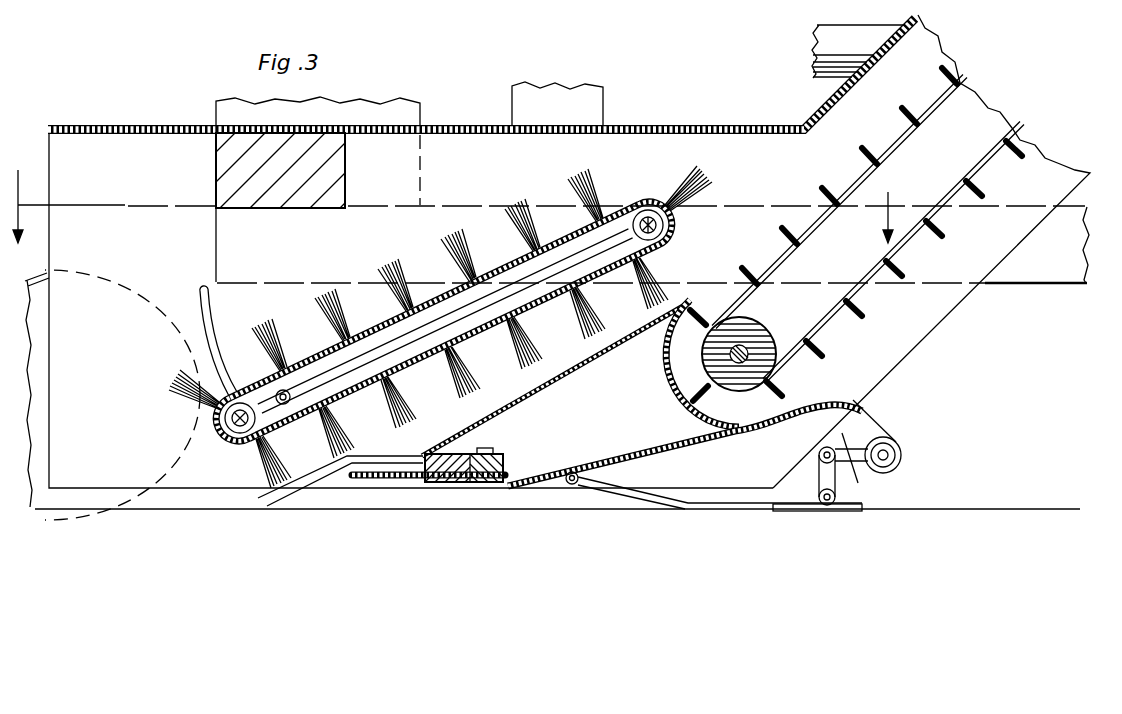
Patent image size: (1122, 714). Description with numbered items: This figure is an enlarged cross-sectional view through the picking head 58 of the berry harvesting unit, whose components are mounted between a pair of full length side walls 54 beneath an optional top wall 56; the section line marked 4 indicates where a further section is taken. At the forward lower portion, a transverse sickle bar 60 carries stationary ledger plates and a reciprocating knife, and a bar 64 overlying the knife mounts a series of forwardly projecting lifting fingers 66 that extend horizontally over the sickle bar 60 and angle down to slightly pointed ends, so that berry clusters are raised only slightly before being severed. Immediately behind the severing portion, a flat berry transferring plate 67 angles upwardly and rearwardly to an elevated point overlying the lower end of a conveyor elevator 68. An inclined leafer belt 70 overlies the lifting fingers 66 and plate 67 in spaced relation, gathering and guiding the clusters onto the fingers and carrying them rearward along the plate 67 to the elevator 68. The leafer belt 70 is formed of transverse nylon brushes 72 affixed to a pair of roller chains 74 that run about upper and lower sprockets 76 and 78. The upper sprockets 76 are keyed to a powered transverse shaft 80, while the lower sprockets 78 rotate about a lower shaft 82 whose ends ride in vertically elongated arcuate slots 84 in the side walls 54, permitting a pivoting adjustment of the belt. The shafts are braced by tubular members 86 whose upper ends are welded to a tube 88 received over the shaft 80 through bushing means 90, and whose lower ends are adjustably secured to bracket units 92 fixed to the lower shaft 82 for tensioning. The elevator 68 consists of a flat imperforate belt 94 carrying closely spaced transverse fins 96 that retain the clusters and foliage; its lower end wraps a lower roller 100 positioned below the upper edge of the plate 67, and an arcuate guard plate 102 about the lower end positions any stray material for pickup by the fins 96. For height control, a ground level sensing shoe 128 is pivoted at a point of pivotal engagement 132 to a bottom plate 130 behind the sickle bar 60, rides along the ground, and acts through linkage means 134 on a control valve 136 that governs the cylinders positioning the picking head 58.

The section line 4- 4 is at (453, 221).
The side walls 54 is at (890, 251).
The top wall 56 is at (673, 128).
The picking head 58 is at (442, 163).
The sickle bar 60 is at (423, 490).
The bar 64 is at (417, 457).
The lifting fingers 66 is at (315, 473).
The berry transferring plate 67 is at (572, 378).
The conveyor elevator 68 is at (878, 157).
The leafer belt 70 is at (438, 322).
The nylon brushes 72 is at (328, 342).
The roller chains 74 is at (435, 293).
The upper sprockets 76 is at (633, 207).
The lower sprockets 78 is at (232, 395).
The transverse shaft 80 is at (672, 228).
The lower shaft 82 is at (223, 437).
The arcuate slots 84 is at (198, 298).
The tubular members 86 is at (570, 263).
The tube 88 is at (657, 207).
The bushing means 90 is at (659, 247).
The bracket units 92 is at (275, 432).
The elevator belt 94 is at (893, 285).
The fins 96 is at (826, 202).
The lower roller 100 is at (760, 343).
The arcuate guard plate 102 is at (665, 367).
The ground level sensing shoe 128 is at (780, 511).
The bottom plate 130 is at (633, 457).
The point of pivotal engagement 132 is at (577, 472).
The linkage means 134 is at (857, 462).
The control valve 136 is at (901, 452).